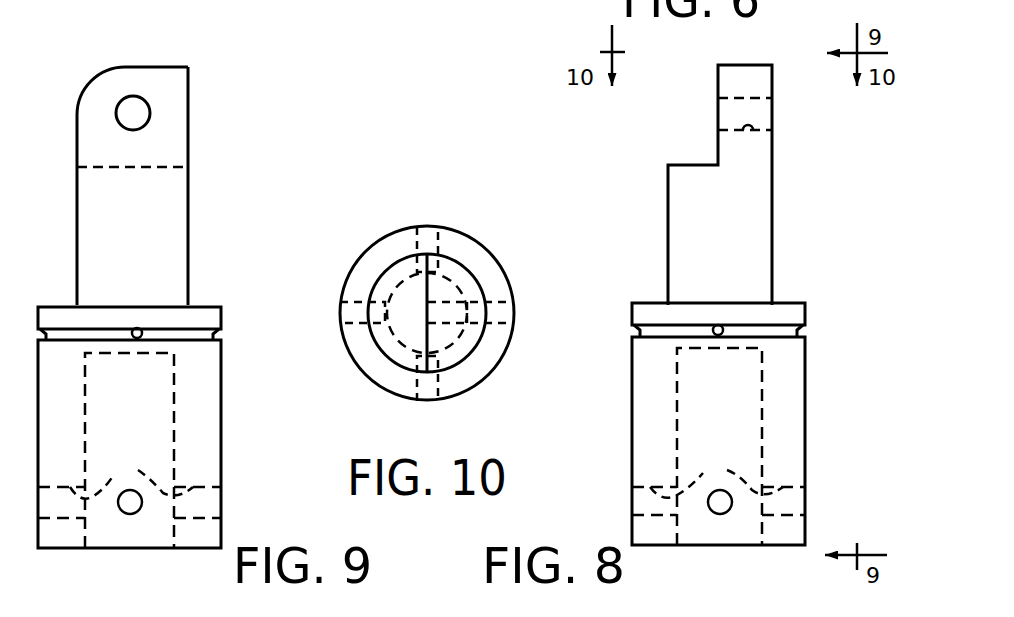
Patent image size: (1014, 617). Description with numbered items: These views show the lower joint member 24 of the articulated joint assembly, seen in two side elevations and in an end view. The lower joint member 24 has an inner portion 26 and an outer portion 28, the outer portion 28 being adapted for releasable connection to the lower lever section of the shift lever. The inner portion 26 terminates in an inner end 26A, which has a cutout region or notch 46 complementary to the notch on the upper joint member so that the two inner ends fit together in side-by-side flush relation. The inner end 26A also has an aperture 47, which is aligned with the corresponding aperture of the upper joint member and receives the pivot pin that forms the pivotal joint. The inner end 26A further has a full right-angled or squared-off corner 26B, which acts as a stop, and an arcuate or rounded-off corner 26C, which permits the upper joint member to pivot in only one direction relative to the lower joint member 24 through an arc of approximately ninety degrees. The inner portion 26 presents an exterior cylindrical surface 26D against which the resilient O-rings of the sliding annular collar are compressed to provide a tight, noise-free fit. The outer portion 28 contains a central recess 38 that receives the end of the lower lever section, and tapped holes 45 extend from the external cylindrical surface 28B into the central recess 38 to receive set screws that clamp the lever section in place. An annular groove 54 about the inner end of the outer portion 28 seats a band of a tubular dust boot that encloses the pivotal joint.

In FIG. 9, the lower joint member 24 is at (225, 228).
In FIG. 10, the lower joint member 24 is at (459, 217).
In FIG. 8, the lower joint member 24 is at (649, 281).
In FIG. 9, the inner portion 26 is at (190, 247).
In FIG. 10, the inner portion 26 is at (468, 360).
In FIG. 8, the inner portion 26 is at (775, 220).
In FIG. 9, the inner end 26A is at (177, 120).
In FIG. 10, the inner end 26A is at (463, 268).
In FIG. 8, the inner end 26A is at (718, 80).
In FIG. 9, the squared-off corner 26B is at (180, 78).
In FIG. 9, the rounded-off corner 26C is at (95, 77).
In FIG. 9, the exterior cylindrical surface 26D is at (188, 182).
In FIG. 8, the exterior cylindrical surface 26D is at (773, 247).
In FIG. 9, the outer portion 28 is at (224, 397).
In FIG. 10, the outer portion 28 is at (367, 252).
In FIG. 8, the outer portion 28 is at (629, 443).
In FIG. 9, the external cylindrical surface 28B is at (222, 458).
In FIG. 8, the external cylindrical surface 28B is at (632, 397).
In FIG. 9, the central recess 38 is at (167, 385).
In FIG. 8, the central recess 38 is at (760, 370).
In FIG. 9, the tapped hole 45 is at (133, 490).
In FIG. 10, the tapped hole 45 is at (440, 249).
In FIG. 8, the tapped hole 45 is at (722, 490).
In FIG. 10, the notch 46 is at (436, 293).
In FIG. 8, the notch 46 is at (717, 163).
In FIG. 9, the aperture 47 is at (143, 99).
In FIG. 10, the aperture 47 is at (452, 296).
In FIG. 8, the aperture 47 is at (740, 134).
In FIG. 9, the annular groove 54 is at (143, 327).
In FIG. 8, the annular groove 54 is at (724, 322).